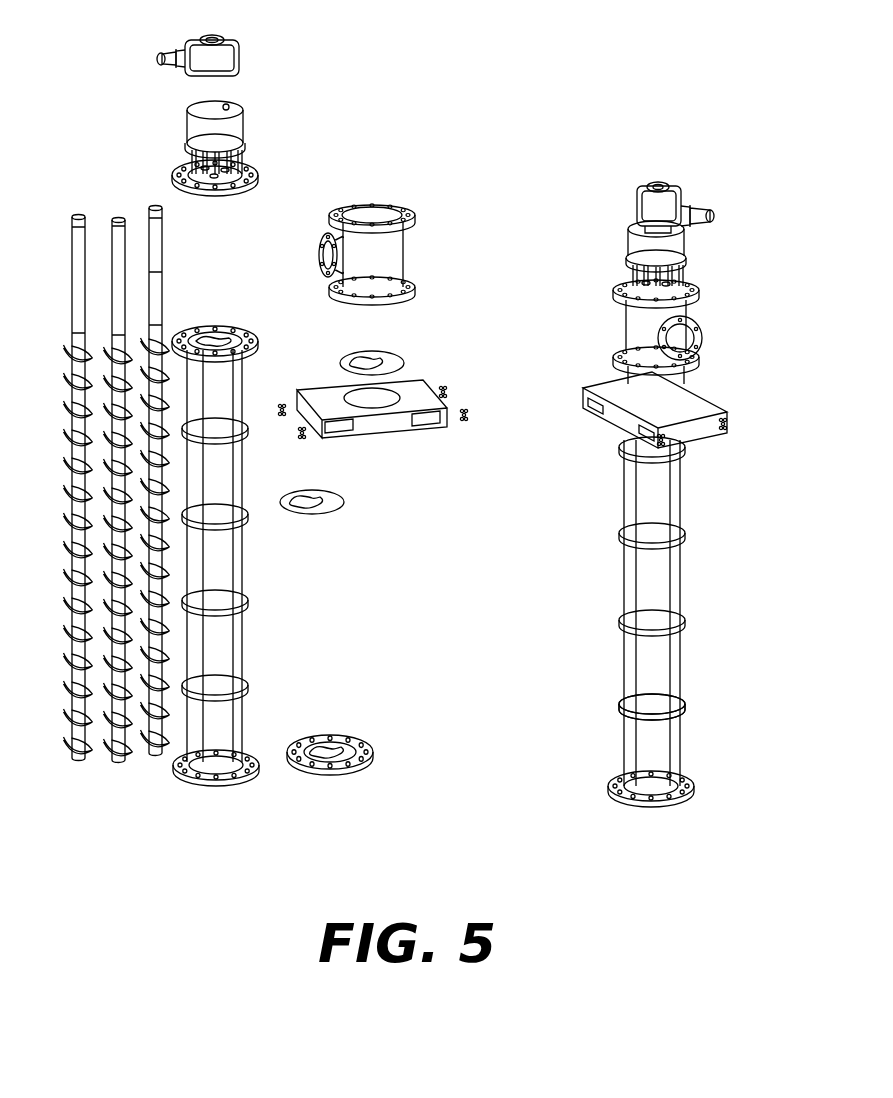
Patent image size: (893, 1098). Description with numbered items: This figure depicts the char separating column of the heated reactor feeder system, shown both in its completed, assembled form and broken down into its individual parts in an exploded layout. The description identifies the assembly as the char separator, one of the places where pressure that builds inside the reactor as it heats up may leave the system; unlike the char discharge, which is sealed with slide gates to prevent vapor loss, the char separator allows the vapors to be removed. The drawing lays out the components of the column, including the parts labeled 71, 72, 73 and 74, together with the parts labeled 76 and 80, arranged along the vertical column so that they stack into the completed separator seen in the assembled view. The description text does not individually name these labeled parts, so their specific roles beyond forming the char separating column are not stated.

The mounting flange 71 is at (258, 178).
The tee pipe section 72 is at (395, 261).
The tee assembly with side flange 73 is at (702, 338).
The upper column flange 74 is at (240, 334).
The auger shafts 76 is at (155, 288).
The bolts 80 is at (466, 422).